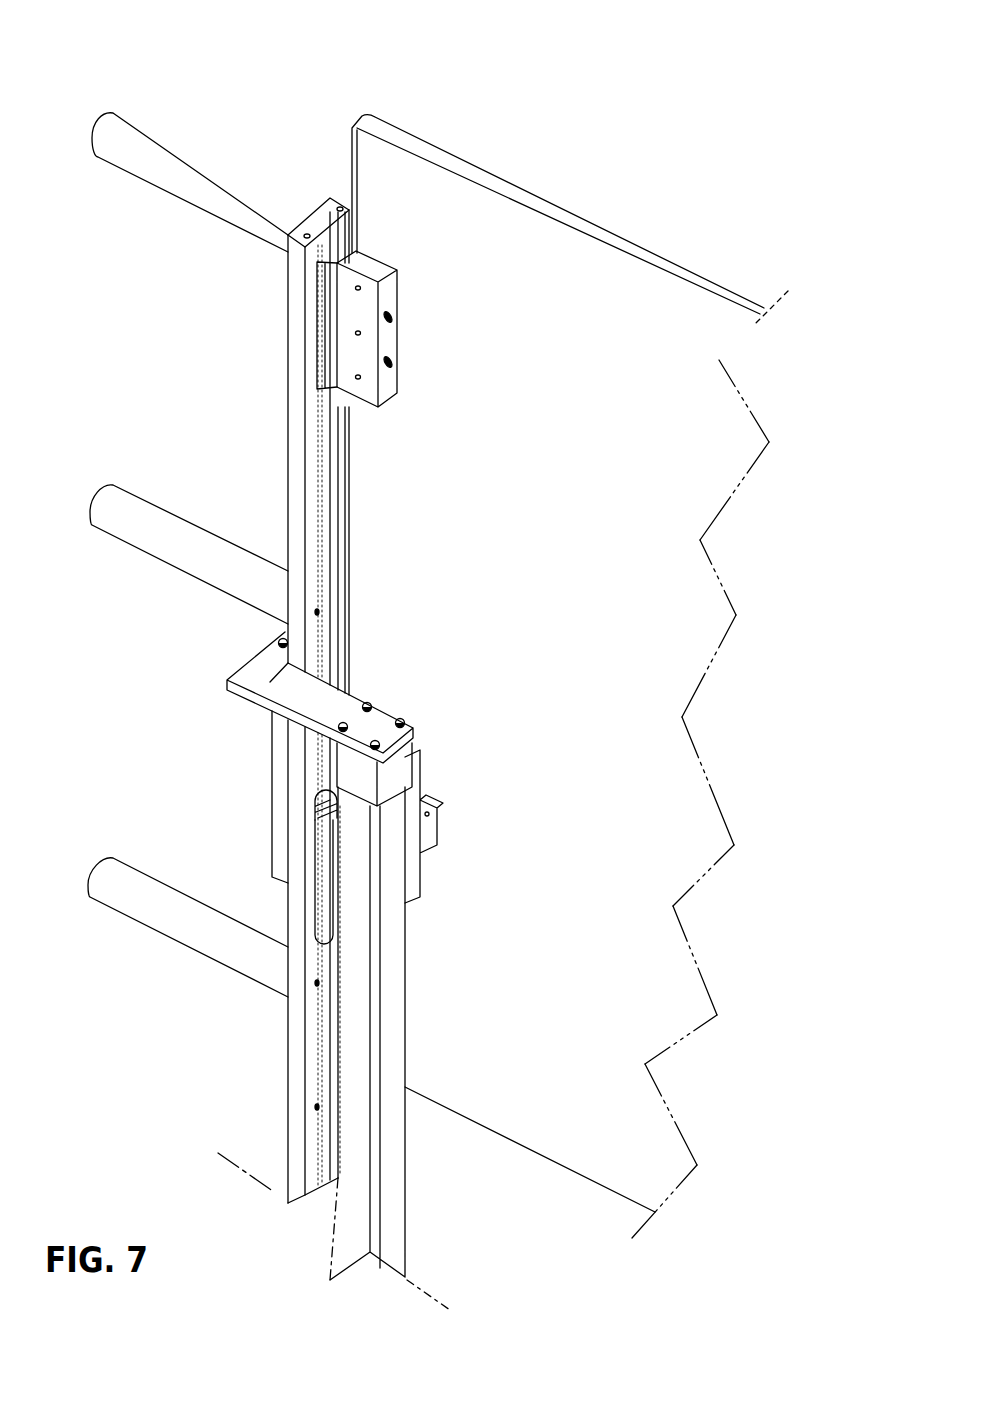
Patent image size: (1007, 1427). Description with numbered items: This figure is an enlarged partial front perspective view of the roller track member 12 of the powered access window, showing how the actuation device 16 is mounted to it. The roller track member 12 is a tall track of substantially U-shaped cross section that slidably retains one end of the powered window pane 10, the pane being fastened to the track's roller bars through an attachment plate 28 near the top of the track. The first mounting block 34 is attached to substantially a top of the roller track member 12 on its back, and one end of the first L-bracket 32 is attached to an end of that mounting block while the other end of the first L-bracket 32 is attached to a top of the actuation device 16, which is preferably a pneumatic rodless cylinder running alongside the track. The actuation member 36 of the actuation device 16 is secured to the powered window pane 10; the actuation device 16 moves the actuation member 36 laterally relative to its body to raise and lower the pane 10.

The powered window pane 10 is at (627, 323).
The roller track member 12 is at (300, 357).
The actuation device 16 is at (388, 1165).
The attachment plate 28 is at (372, 256).
The first L-bracket 32 is at (270, 678).
The first mounting block 34 is at (282, 807).
The actuation member 36 is at (435, 837).